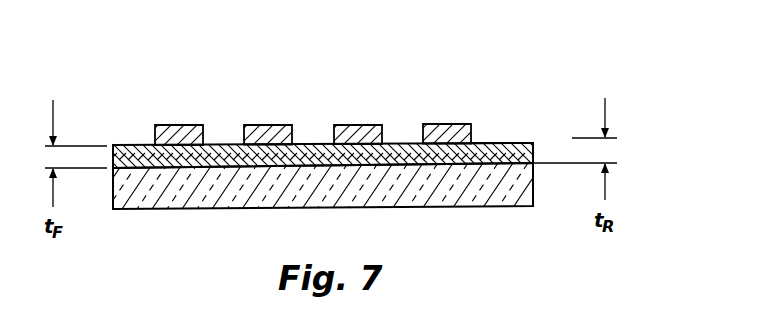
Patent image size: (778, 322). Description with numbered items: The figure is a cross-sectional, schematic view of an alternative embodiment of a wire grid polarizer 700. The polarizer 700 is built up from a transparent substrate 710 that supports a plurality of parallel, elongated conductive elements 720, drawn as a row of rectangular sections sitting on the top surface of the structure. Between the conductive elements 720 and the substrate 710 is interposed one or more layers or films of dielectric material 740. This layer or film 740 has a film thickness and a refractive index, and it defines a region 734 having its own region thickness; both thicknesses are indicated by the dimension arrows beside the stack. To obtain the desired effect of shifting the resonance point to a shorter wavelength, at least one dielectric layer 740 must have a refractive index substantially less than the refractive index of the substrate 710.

The polarizer 700 is at (653, 149).
The transparent substrate 710 is at (482, 207).
The conductive elements 720 is at (423, 125).
The region 734 is at (544, 146).
The dielectric layer 740 is at (487, 145).